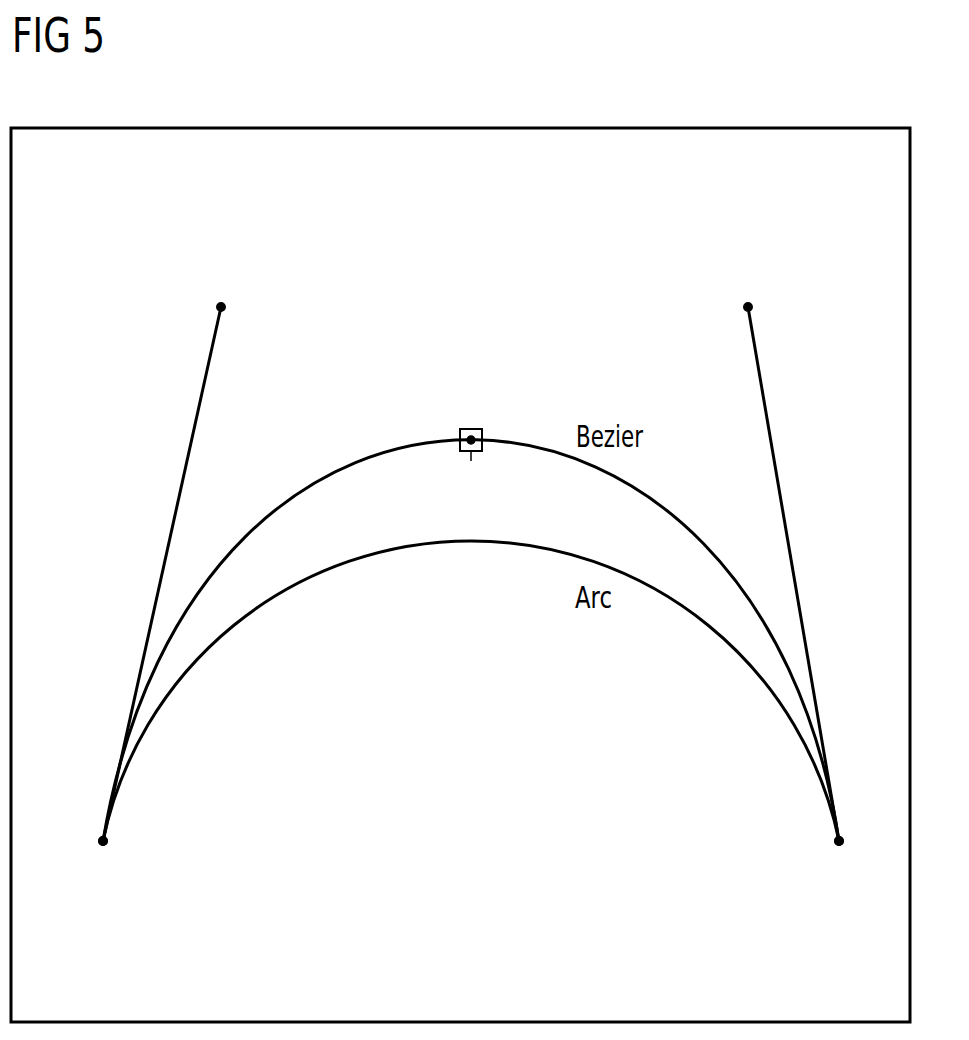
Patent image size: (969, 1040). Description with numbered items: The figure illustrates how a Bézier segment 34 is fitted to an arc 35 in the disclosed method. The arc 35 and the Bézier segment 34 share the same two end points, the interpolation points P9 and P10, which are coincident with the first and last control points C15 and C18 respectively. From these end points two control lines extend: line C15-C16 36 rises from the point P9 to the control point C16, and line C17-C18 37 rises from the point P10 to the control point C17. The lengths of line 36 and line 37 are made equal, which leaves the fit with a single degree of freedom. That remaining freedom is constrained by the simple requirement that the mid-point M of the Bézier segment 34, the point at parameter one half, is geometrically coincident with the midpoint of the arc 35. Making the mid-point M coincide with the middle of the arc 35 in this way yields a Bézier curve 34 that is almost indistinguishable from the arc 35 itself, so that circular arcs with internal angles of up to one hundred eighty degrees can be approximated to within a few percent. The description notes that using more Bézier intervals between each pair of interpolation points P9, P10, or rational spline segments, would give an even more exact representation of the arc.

The Bézier segment 34 is at (675, 515).
The arc 35 is at (640, 578).
The line C15-C16 36 is at (177, 498).
The line C17-C18 37 is at (783, 500).
The control point C15 is at (103, 861).
The control point C16 is at (222, 290).
The control point C17 is at (751, 290).
The control point C18 is at (839, 861).
The interpolation point P9 is at (82, 839).
The interpolation point P10 is at (814, 841).
The mid-point M is at (470, 444).